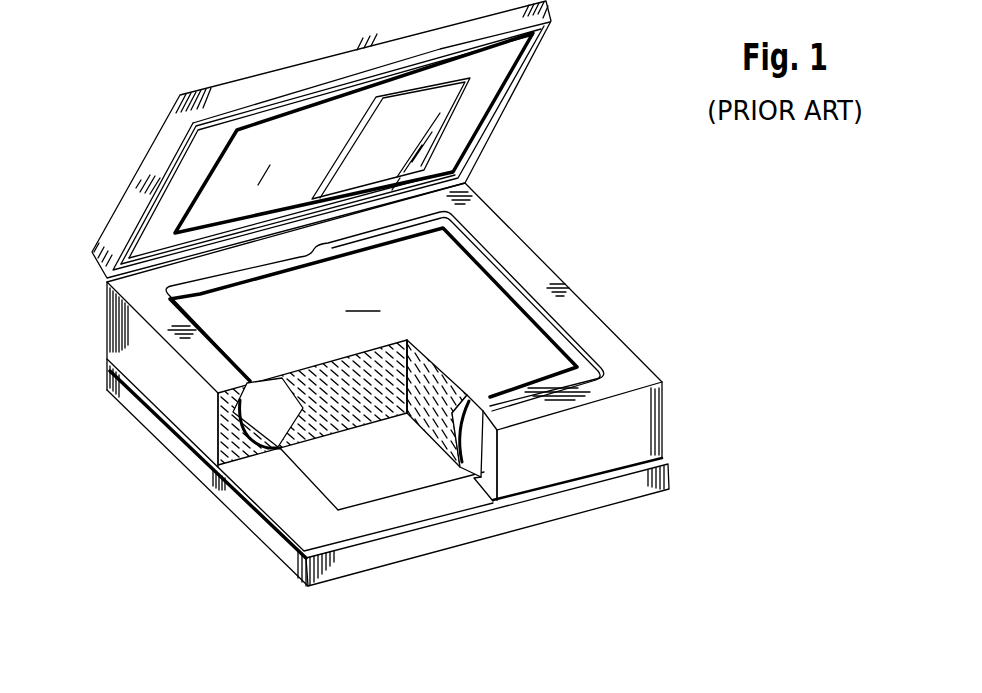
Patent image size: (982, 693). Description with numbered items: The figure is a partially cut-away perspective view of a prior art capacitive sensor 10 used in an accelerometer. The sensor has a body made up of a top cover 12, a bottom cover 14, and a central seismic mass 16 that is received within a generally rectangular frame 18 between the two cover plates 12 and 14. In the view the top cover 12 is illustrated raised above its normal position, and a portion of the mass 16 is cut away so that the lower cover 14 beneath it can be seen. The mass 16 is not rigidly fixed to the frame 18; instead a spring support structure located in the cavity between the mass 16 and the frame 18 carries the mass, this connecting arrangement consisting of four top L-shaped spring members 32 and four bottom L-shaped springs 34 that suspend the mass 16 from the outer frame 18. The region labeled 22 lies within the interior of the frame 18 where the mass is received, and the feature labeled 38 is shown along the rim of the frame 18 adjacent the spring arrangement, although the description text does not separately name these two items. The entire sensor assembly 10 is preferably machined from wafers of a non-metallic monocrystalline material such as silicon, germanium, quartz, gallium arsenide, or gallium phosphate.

The capacitive sensor 10 is at (557, 167).
The top cover 12 is at (502, 71).
The bottom cover 14 is at (297, 538).
The central mass 16 is at (446, 286).
The frame 18 is at (170, 313).
The cavity 22 is at (357, 395).
The top L-shaped spring members 32 is at (562, 322).
The bottom L-shaped springs 34 is at (250, 440).
The rim surface 38 is at (580, 353).